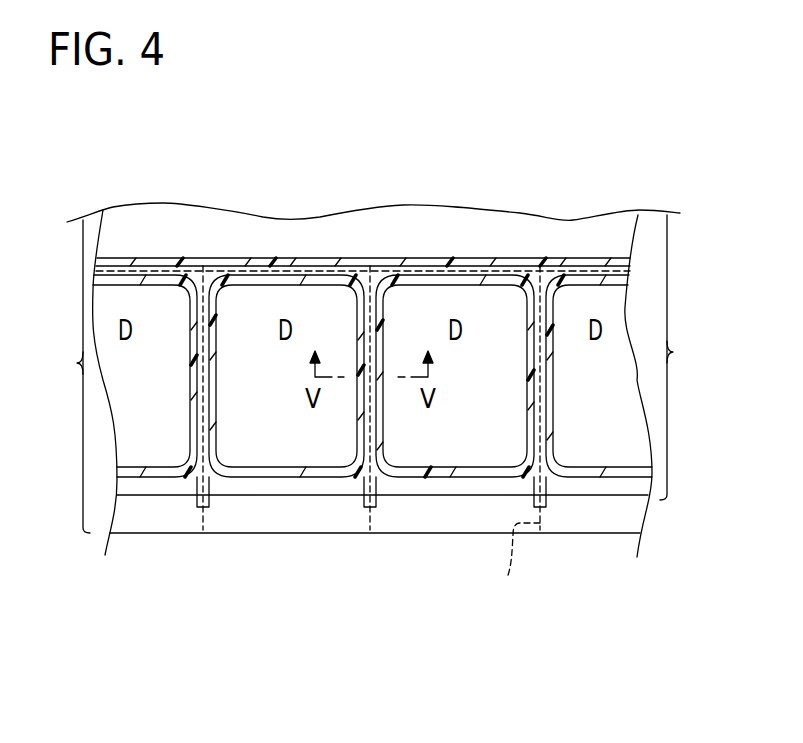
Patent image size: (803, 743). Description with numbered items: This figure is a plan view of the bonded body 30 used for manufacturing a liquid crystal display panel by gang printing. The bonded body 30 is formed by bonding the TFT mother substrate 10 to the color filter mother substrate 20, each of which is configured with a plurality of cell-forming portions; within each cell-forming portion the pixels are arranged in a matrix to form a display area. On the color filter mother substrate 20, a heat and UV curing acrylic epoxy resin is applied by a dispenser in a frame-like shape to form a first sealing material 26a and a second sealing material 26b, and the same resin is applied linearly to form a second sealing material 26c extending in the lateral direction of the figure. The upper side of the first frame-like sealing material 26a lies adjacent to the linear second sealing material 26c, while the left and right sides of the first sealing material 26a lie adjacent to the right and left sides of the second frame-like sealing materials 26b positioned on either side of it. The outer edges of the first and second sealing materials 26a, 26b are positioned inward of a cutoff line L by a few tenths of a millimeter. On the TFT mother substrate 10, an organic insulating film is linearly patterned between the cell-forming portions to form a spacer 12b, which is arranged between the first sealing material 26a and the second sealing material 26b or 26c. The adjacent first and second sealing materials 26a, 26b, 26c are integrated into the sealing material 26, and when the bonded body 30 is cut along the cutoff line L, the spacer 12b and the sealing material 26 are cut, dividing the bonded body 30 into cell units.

The bonded body 30 is at (108, 172).
The TFT mother substrate 10 is at (344, 376).
The color filter mother substrate 20 is at (686, 357).
The sealing material 26 is at (440, 590).
The first sealing material 26a is at (435, 473).
The second sealing material 26b is at (292, 473).
The second sealing material 26c is at (432, 265).
The spacer 12b is at (547, 502).
The cutoff line L is at (518, 567).